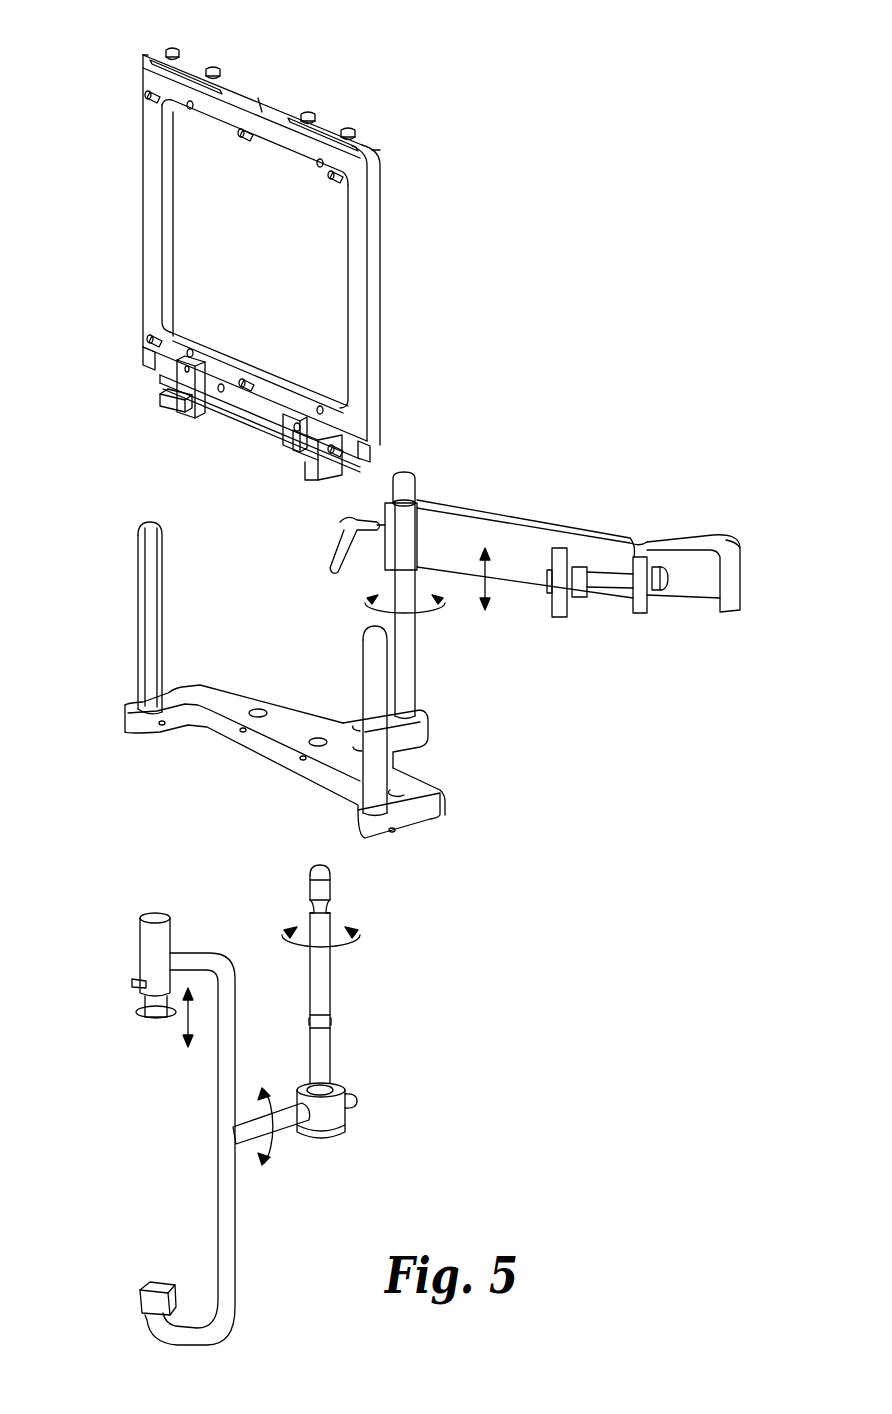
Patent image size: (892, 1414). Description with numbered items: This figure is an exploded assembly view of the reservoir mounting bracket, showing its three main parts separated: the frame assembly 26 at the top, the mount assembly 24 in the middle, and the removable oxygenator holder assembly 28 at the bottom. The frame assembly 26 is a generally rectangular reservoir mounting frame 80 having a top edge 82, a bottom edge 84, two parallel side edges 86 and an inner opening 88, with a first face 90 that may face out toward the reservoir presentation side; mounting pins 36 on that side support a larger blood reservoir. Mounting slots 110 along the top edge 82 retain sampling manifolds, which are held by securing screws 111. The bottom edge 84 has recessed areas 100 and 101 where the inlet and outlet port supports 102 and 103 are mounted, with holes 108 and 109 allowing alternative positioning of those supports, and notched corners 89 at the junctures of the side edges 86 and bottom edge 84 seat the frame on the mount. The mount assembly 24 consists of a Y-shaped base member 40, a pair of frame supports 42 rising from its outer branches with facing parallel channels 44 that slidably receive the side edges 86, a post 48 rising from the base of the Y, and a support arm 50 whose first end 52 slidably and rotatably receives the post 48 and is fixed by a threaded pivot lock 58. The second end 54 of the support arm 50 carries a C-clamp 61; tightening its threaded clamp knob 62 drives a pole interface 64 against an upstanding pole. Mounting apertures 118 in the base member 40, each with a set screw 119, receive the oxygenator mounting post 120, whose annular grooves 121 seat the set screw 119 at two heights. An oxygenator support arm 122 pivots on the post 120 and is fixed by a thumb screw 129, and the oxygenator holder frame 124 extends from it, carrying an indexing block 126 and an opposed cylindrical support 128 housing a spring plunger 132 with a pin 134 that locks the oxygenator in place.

The mount assembly 24 is at (440, 832).
The frame assembly 26 is at (290, 100).
The removable oxygenator holder assembly 28 is at (334, 1126).
The mounting pins 36 is at (325, 180).
The base member 40 is at (430, 790).
The frame supports 42 is at (146, 525).
The channels 44 is at (150, 585).
The post 48 is at (410, 660).
The support arm 50 is at (525, 520).
The first end 52 is at (420, 502).
The second end 54 is at (642, 540).
The threaded pivot lock 58 is at (336, 556).
The C-clamp 61 is at (720, 536).
The threaded clamp knob 62 is at (560, 617).
The pole interface 64 is at (665, 588).
The reservoir mounting frame 80 is at (136, 114).
The top edge 82 is at (236, 100).
The bottom edge 84 is at (258, 410).
The side edges 86 is at (148, 178).
The inner opening 88 is at (255, 256).
The notched corners 89 is at (147, 360).
The first face 90 is at (258, 112).
The recessed area 100 is at (213, 405).
The recessed area 101 is at (290, 430).
The inlet port support 102 is at (158, 399).
The outlet port support 103 is at (310, 462).
The holes 108 is at (220, 384).
The holes 109 is at (300, 422).
The mounting slots 110 is at (142, 56).
The securing screws 111 is at (214, 67).
The mounting apertures 118 is at (316, 739).
The set screw 119 is at (303, 759).
The oxygenator mounting post 120 is at (326, 985).
The annular grooves 121 is at (331, 1022).
The oxygenator support arm 122 is at (242, 1148).
The oxygenator holder frame 124 is at (235, 1262).
The indexing block 126 is at (158, 1282).
The cylindrical support 128 is at (150, 943).
The thumb screw 129 is at (356, 1098).
The spring plunger 132 is at (140, 1020).
The pin 134 is at (132, 982).